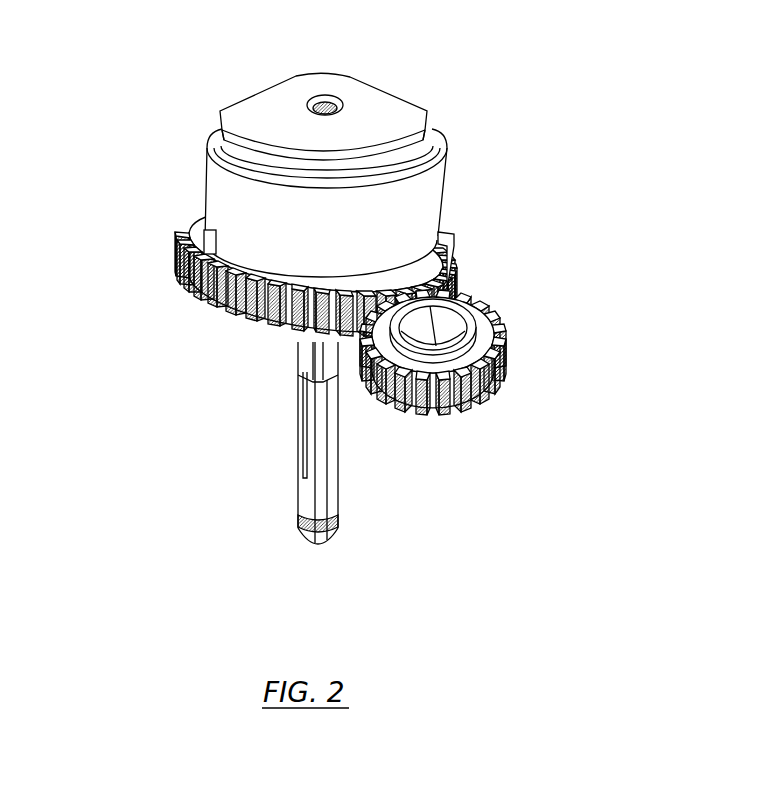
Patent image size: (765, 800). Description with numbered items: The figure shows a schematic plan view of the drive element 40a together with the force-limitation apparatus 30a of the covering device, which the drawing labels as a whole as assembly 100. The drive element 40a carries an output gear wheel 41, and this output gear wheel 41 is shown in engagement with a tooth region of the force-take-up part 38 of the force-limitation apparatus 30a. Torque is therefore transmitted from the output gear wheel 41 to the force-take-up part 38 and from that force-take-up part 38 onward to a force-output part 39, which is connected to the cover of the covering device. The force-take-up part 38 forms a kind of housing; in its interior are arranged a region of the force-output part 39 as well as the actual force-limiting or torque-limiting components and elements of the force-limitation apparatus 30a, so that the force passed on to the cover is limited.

The gear motor assembly 100 is at (356, 340).
The force-limitation apparatus 30a is at (287, 245).
The force-take-up part 38 is at (236, 200).
The force-output part 39 is at (302, 455).
The drive element 40a is at (455, 354).
The output gear wheel 41 is at (482, 336).